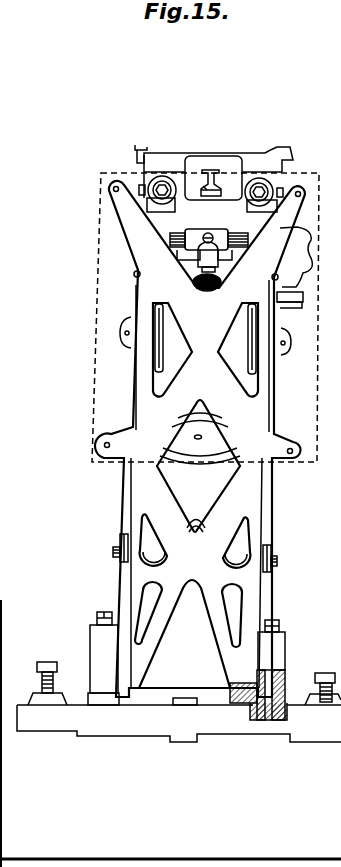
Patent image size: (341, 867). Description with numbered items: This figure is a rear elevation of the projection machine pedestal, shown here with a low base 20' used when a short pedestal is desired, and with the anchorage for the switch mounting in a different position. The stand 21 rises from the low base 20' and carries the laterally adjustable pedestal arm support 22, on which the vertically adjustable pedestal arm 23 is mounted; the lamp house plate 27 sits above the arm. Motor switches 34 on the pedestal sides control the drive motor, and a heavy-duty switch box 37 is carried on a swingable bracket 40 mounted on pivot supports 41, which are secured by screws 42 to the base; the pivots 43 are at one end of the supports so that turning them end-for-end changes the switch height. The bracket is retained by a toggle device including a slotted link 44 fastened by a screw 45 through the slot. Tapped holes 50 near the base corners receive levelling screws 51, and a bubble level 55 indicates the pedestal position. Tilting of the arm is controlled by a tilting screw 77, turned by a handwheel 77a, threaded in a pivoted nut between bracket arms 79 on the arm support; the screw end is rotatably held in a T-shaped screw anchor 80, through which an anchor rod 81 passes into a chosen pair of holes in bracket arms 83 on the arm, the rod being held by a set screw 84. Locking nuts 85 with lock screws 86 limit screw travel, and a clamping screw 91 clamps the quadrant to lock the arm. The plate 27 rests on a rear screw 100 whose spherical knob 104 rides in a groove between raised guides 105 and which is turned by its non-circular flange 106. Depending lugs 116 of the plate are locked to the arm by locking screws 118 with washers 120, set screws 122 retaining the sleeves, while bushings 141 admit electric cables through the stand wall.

The low base 20' is at (179, 717).
The stand 21 is at (266, 526).
The pedestal arm support 22 is at (135, 276).
The pedestal arm 23 is at (148, 170).
The lamp house carriage or plate 27 is at (137, 150).
The motor switches 34 is at (127, 333).
The detail region 37 is at (96, 364).
The swingable bracket 40 is at (250, 502).
The pivot supports 41 is at (98, 638).
The screws 42 is at (105, 612).
The pivots 43 is at (238, 683).
The slotted link 44 is at (121, 534).
The screw 45 is at (112, 549).
The tapped hole 50 is at (40, 690).
The levelling screws 51 is at (47, 660).
The bubble level 55 is at (295, 296).
The tilting screw 77 is at (226, 267).
The handwheel 77a is at (200, 447).
The bracket arms 79 is at (177, 255).
The T-shaped screw anchor 80 is at (198, 233).
The anchor rod 81 is at (181, 233).
The bracket arms 83 is at (254, 376).
The set screw 84 is at (212, 240).
The locking nuts 85 is at (220, 287).
The lock screws 86 is at (196, 285).
The clamping screw 91 is at (306, 260).
The rear screw 100 is at (198, 160).
The spherical knob 104 is at (215, 188).
The raised guides 105 is at (206, 186).
The non-circular flange or nut 106 is at (225, 170).
The depending lugs 116 is at (280, 188).
The locking screws 118 is at (306, 188).
The washers 120 is at (270, 156).
The set screws 122 is at (140, 185).
The bushings 141 is at (200, 521).